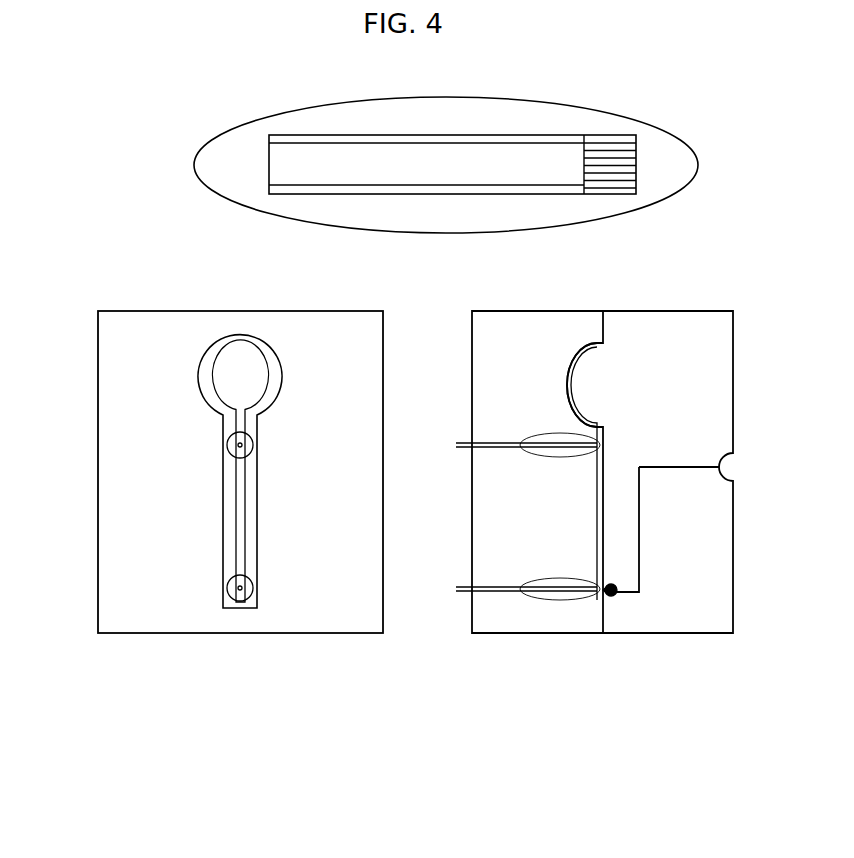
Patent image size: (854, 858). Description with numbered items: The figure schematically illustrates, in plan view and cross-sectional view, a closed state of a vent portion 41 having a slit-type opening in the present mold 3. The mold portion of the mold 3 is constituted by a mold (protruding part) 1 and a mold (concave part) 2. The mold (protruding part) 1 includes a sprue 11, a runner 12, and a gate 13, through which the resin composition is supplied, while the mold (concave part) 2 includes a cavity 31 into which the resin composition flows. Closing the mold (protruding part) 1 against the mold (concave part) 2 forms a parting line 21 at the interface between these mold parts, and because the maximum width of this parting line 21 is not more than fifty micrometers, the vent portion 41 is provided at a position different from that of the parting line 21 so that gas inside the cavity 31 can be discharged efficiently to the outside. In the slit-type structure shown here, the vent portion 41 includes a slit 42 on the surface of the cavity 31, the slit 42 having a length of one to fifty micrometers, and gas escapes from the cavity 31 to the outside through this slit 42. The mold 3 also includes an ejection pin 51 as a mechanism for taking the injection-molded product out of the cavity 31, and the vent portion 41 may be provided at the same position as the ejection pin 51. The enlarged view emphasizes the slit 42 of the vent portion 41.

The mold (protruding part) 1 is at (733, 331).
The sprue 11 is at (683, 467).
The runner 12 is at (640, 518).
The gate 13 is at (611, 597).
The mold (concave part) 2 is at (528, 432).
The mold 3 is at (98, 353).
The parting line 21 is at (210, 397).
The cavity 31 is at (573, 377).
The vent portion 41 is at (560, 580).
The slit 42 is at (605, 135).
The ejection pin 51 is at (253, 445).